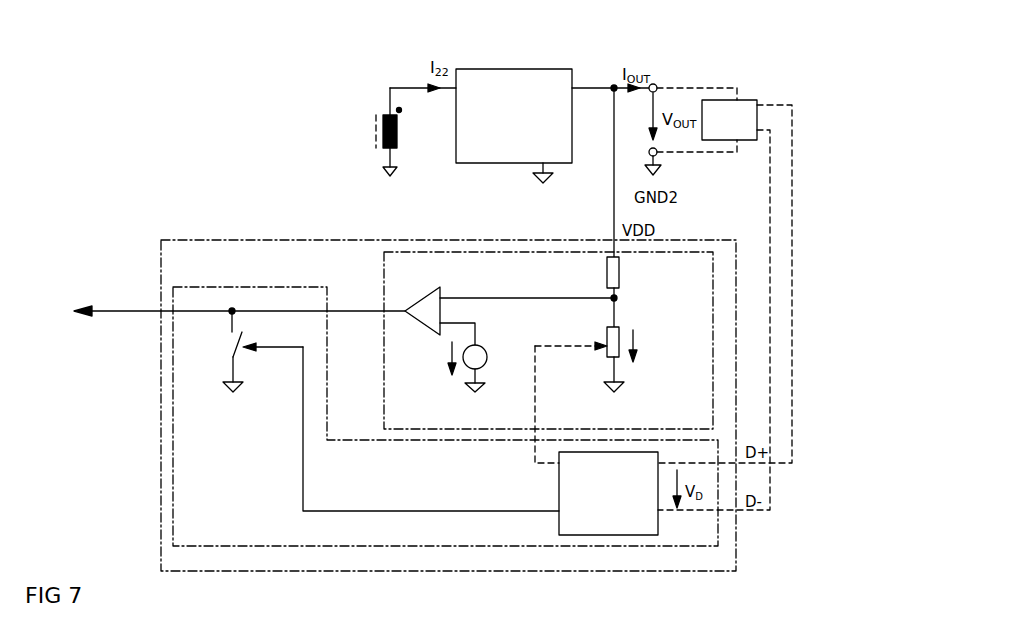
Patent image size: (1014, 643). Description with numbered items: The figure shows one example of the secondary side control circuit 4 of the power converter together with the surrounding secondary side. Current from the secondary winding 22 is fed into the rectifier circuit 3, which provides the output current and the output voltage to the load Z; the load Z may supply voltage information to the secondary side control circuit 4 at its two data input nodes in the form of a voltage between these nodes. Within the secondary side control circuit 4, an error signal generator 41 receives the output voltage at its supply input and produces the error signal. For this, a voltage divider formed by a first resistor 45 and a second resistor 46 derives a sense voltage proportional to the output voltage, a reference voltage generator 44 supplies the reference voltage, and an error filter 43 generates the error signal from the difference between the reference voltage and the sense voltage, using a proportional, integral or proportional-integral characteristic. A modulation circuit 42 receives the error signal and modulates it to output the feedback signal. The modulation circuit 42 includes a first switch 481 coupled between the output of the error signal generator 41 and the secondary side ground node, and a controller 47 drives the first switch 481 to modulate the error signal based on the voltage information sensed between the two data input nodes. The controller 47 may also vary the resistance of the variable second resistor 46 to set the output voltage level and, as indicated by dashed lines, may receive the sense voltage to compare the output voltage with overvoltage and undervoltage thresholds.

The rectifier circuit 3 is at (520, 69).
The secondary winding 22 is at (397, 137).
The secondary side control circuit 4 is at (448, 240).
The error signal generator 41 is at (384, 282).
The modulation circuit 42 is at (268, 287).
The error filter 43 is at (425, 293).
The reference voltage generator 44 is at (483, 347).
The first resistor 45 is at (619, 277).
The second resistor 46 is at (619, 333).
The controller 47 is at (591, 495).
The first switch 481 is at (230, 348).
The load Z is at (743, 100).